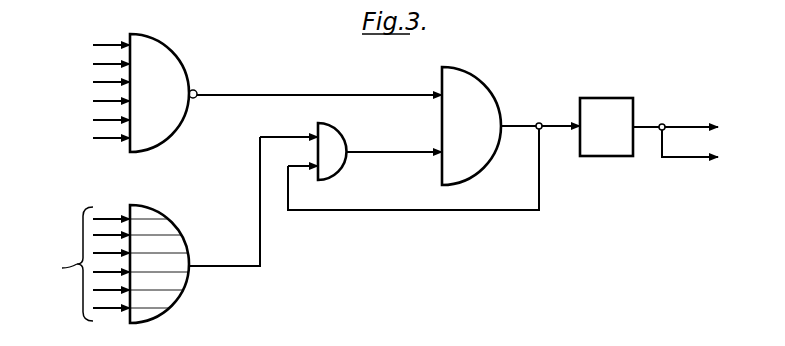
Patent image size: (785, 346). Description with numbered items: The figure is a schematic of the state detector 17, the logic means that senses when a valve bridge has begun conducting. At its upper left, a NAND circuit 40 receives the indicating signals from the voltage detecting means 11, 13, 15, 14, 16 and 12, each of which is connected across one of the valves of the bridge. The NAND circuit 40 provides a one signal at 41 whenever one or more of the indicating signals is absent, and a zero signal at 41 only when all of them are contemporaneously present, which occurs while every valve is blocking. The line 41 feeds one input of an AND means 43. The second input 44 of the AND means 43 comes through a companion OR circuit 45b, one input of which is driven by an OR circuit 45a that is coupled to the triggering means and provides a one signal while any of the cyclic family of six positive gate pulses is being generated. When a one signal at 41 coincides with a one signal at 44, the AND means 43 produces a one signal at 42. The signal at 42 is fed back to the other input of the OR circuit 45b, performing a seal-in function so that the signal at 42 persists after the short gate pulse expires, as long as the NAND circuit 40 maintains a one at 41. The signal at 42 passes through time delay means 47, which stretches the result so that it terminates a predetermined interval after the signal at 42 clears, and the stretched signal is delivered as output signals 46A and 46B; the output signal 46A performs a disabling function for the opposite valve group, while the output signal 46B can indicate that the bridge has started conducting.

The voltage detecting means 11 is at (101, 45).
The voltage detecting means 13 is at (101, 64).
The voltage detecting means 15 is at (101, 82).
The voltage detecting means 14 is at (101, 101).
The voltage detecting means 16 is at (101, 120).
The voltage detecting means 12 is at (101, 138).
The NAND circuit 40 is at (176, 56).
The NAND circuit output 41 is at (314, 92).
The companion OR circuit 45b is at (338, 131).
The second input of the AND means 44 is at (403, 156).
The AND means 43 is at (488, 87).
The AND output signal point 42 is at (550, 123).
The time delay means 47 is at (619, 97).
The output signal 46A is at (692, 128).
The output signal 46B is at (707, 149).
The OR circuit 45a is at (182, 233).
The state detector 17 is at (355, 271).